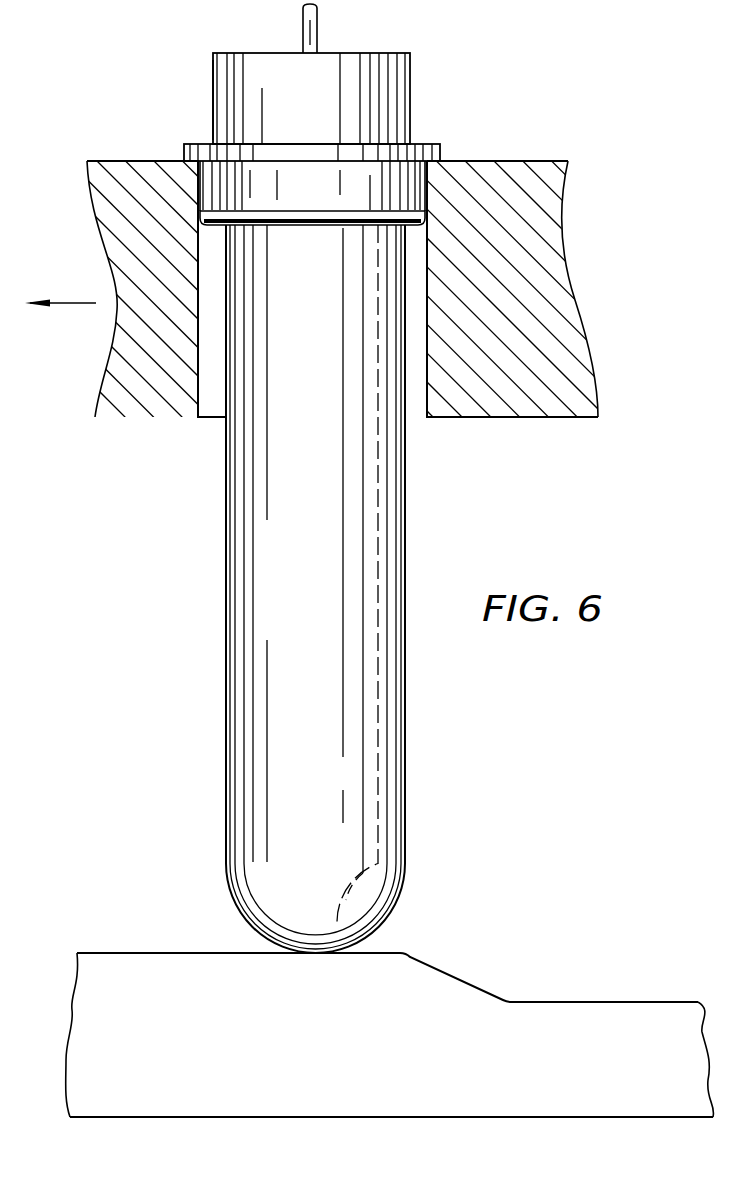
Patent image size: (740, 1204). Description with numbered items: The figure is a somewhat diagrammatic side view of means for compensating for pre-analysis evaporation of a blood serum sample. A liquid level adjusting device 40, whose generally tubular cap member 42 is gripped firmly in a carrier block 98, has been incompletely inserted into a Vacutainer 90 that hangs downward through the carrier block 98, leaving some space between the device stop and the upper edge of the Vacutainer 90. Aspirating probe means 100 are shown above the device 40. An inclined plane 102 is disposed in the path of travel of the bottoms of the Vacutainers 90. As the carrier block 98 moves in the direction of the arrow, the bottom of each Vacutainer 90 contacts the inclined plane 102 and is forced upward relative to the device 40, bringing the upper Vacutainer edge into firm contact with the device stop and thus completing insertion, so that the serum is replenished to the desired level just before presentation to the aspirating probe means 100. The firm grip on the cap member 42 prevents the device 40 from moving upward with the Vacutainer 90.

The liquid level adjusting device 40 is at (414, 97).
The cap member 42 is at (218, 88).
The Vacutainer 90 is at (230, 705).
The carrier block 98 is at (135, 410).
The aspirating probe means 100 is at (318, 28).
The inclined plane 102 is at (442, 973).